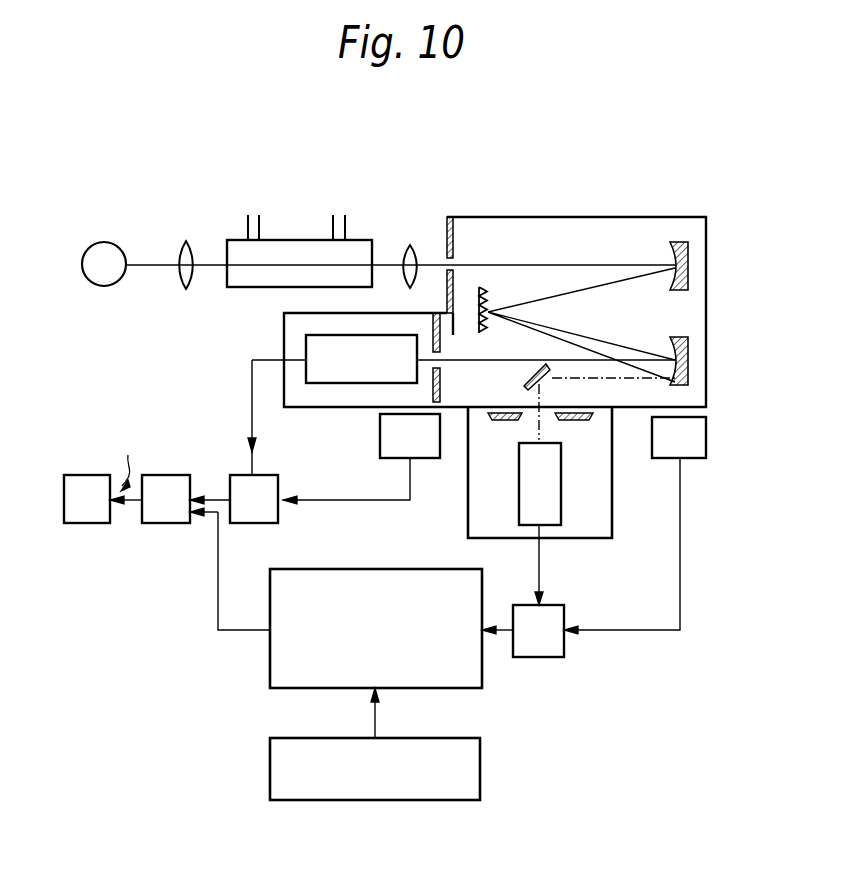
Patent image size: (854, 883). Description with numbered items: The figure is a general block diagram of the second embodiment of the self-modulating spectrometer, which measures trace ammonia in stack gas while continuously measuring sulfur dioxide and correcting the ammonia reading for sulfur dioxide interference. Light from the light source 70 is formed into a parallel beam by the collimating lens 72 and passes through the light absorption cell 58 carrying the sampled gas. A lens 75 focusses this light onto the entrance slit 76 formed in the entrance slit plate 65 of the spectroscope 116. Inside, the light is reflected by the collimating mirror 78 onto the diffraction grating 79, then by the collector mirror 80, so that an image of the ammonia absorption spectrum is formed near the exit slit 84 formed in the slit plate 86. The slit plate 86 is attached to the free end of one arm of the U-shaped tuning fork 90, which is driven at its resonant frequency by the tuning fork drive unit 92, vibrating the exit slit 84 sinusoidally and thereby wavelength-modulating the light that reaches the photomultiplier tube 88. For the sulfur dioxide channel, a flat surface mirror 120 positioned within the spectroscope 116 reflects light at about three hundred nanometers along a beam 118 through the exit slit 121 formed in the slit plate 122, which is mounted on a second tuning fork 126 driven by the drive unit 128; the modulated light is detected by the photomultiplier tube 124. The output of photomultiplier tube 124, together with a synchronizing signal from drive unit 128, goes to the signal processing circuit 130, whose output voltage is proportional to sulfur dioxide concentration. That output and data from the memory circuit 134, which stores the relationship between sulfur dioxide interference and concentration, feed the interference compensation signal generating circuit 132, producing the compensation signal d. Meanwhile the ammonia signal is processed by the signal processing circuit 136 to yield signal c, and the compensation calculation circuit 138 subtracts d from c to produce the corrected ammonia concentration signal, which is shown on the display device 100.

The light absorption cell 58 is at (307, 237).
The entrance slit plate 65 is at (455, 233).
The light source 70 is at (106, 287).
The collimating lens 72 is at (188, 290).
The lens 75 is at (412, 243).
The entrance slit 76 is at (454, 264).
The collimating mirror 78 is at (673, 252).
The diffraction grating 79 is at (490, 330).
The collector mirror 80 is at (672, 348).
The exit slit 84 is at (418, 342).
The slit plate 86 is at (441, 378).
The photomultiplier tube 88 is at (334, 380).
The tuning fork 90 is at (462, 415).
The tuning fork drive unit 92 is at (395, 448).
The display device 100 is at (90, 524).
The spectroscope 116 is at (569, 216).
The reference light beam 118 is at (577, 378).
The flat surface mirror 120 is at (528, 381).
The exit slit 121 is at (530, 418).
The slit plate 122 is at (579, 422).
The photomultiplier tube 124 is at (561, 496).
The tuning fork 126 is at (631, 416).
The drive unit 128 is at (706, 448).
The signal processing circuit 130 is at (556, 649).
The interference compensation signal generating circuit 132 is at (270, 670).
The memory circuit 134 is at (480, 783).
The signal processing circuit 136 is at (266, 512).
The compensation calculation circuit 138 is at (166, 524).